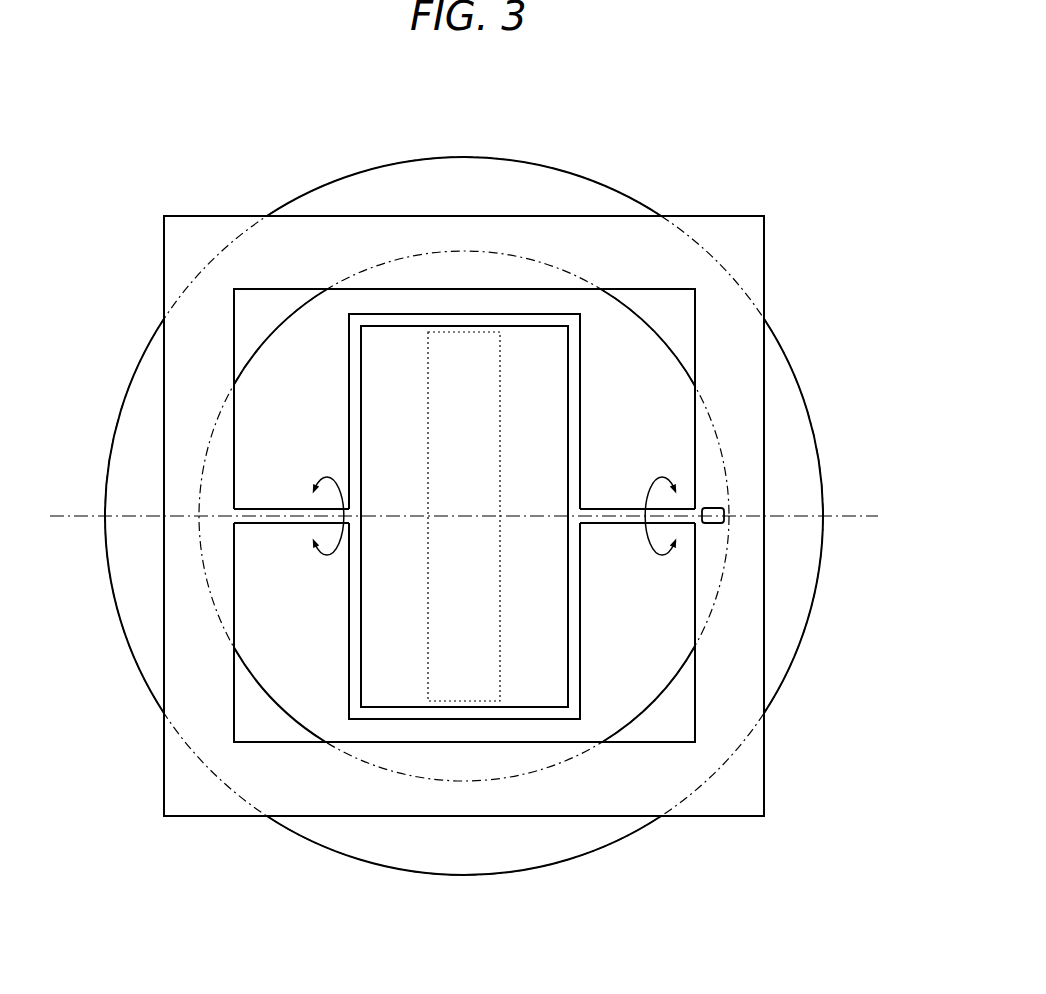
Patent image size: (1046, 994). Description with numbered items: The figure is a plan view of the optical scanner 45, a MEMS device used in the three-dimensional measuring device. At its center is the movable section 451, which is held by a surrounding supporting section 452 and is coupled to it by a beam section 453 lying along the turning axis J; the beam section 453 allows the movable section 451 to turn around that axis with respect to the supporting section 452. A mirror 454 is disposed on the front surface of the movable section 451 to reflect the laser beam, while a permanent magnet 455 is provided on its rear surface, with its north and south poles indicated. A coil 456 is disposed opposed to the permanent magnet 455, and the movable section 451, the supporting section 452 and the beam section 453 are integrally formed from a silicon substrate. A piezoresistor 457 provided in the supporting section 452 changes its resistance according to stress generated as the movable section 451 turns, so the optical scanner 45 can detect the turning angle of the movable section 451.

The optical scanner 45 is at (729, 134).
The movable section 451 is at (384, 316).
The supporting section 452 is at (638, 782).
The beam section 453 is at (629, 507).
The mirror 454 is at (547, 680).
The permanent magnet 455 is at (502, 390).
The coil 456 is at (125, 452).
The piezoresistor 457 is at (712, 523).